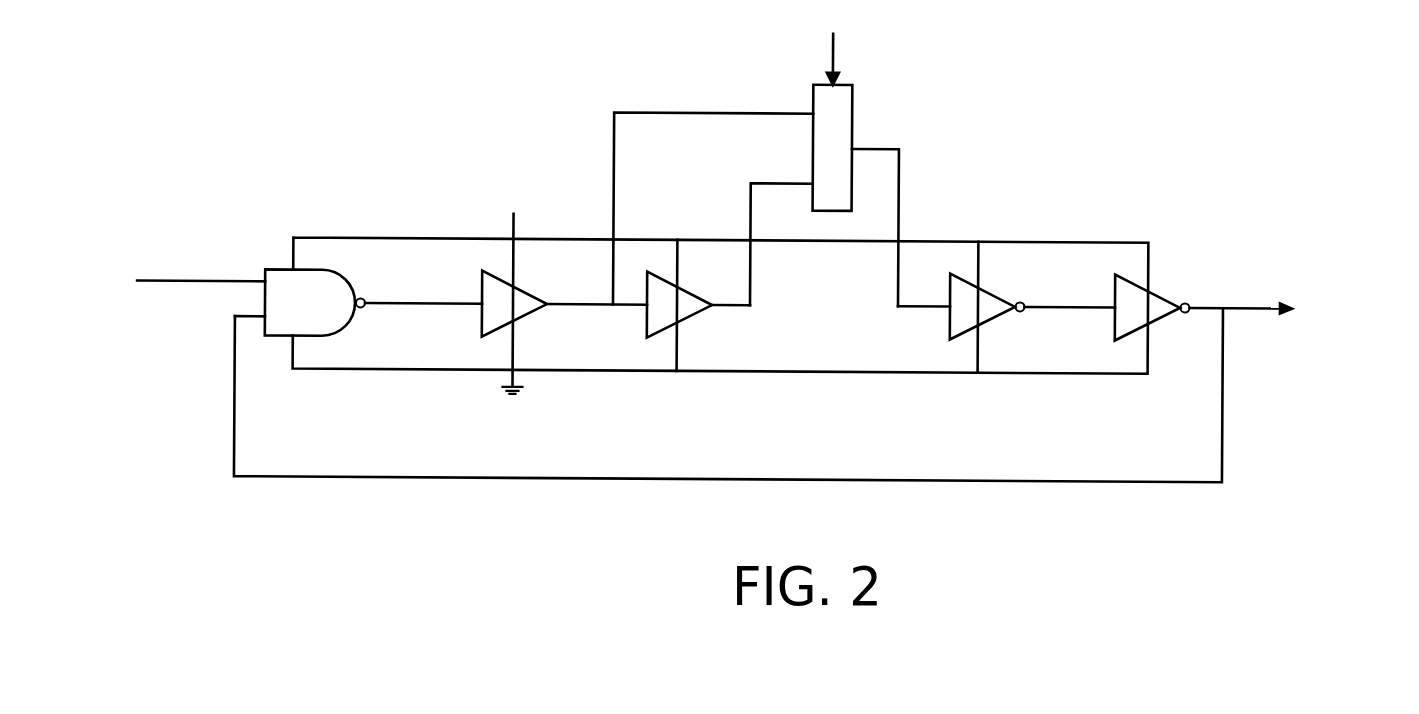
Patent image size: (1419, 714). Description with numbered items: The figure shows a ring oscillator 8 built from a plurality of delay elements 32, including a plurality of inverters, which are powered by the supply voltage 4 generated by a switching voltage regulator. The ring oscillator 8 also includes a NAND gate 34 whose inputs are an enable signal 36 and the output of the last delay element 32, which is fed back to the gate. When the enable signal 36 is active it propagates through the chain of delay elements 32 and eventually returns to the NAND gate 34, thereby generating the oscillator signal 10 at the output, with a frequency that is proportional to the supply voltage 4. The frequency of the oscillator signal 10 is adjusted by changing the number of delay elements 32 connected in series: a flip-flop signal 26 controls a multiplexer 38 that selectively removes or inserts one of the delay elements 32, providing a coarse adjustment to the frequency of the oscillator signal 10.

The supply voltage 4 is at (516, 229).
The ring oscillator 8 is at (1104, 180).
The oscillator signal 10 is at (1260, 317).
The flip-flop signal 26 is at (833, 46).
The delay elements 32 is at (522, 313).
The NAND gate 34 is at (356, 320).
The enable signal 36 is at (167, 283).
The multiplexer 38 is at (852, 103).